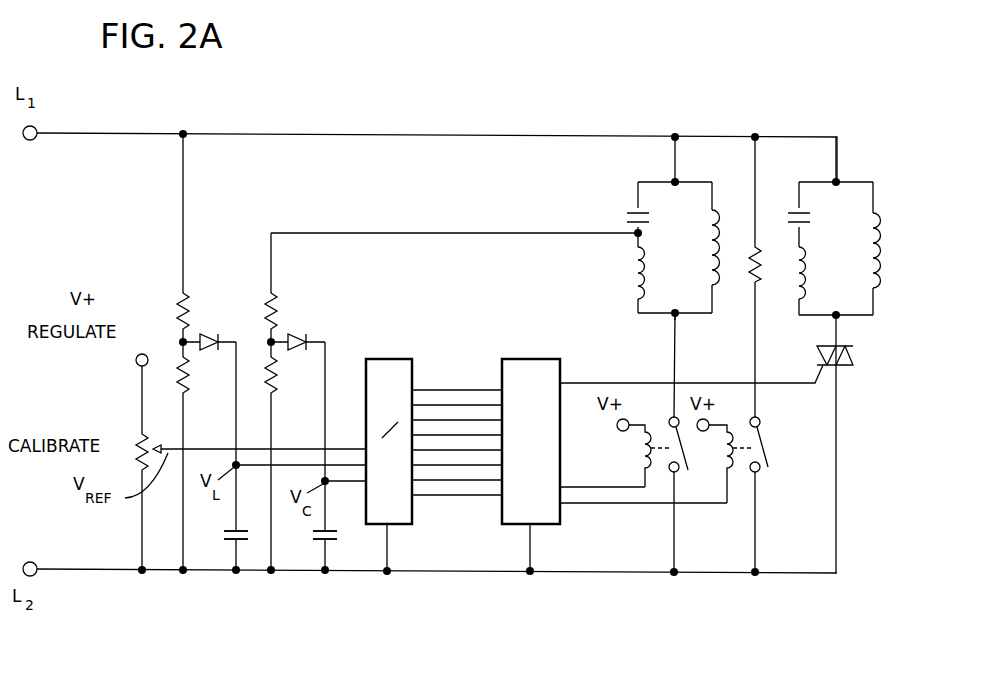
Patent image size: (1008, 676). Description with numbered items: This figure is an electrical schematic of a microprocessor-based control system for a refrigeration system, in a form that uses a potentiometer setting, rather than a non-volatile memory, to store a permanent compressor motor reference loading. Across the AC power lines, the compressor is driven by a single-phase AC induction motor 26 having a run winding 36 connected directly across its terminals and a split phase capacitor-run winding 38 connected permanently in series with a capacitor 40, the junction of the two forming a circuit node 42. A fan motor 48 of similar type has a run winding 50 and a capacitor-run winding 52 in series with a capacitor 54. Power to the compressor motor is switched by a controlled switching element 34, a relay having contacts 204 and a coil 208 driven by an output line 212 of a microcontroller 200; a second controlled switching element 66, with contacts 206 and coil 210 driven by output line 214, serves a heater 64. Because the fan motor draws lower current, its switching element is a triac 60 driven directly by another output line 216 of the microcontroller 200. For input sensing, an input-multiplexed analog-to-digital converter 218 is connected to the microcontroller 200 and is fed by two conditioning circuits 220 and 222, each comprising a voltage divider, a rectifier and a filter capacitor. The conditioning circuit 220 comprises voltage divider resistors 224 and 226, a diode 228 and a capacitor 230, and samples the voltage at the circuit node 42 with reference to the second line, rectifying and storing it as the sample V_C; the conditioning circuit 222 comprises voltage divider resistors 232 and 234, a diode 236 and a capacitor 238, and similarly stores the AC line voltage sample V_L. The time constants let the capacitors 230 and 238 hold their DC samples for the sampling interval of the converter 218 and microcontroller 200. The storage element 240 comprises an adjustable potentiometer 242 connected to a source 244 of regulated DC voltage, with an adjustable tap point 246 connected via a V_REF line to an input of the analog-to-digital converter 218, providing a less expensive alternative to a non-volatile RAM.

The single-phase AC induction motor 26 is at (495, 228).
The controlled switching element 34 is at (640, 442).
The run winding 36 is at (715, 279).
The capacitor-run winding 38 is at (636, 296).
The capacitor 40 is at (636, 208).
The circuit node 42 is at (634, 231).
The fan motor 48 is at (829, 226).
The run winding 50 is at (872, 264).
The capacitor-run winding 52 is at (803, 282).
The capacitor 54 is at (797, 208).
The triac 60 is at (845, 365).
The heater 64 is at (753, 285).
The controlled switching element 66 is at (752, 427).
The microcontroller 200 is at (515, 527).
The contacts 204 is at (665, 438).
The contacts 206 is at (767, 460).
The coil 208 is at (622, 453).
The coil 210 is at (727, 468).
The output line 212 is at (600, 490).
The output line 214 is at (681, 504).
The output line 216 is at (792, 382).
The analog-to-digital converter 218 is at (395, 527).
The conditioning circuit 220 is at (311, 444).
The conditioning circuit 222 is at (230, 432).
The voltage divider resistor 224 is at (265, 290).
The voltage divider resistor 226 is at (278, 380).
The diode 228 is at (296, 333).
The capacitor 230 is at (338, 533).
The voltage divider resistor 232 is at (190, 292).
The voltage divider resistor 234 is at (188, 368).
The diode 236 is at (206, 333).
The capacitor 238 is at (241, 530).
The storage element 240 is at (105, 478).
The adjustable potentiometer 242 is at (134, 462).
The source of regulated DC voltage 244 is at (135, 360).
The adjustable tap point 246 is at (156, 438).